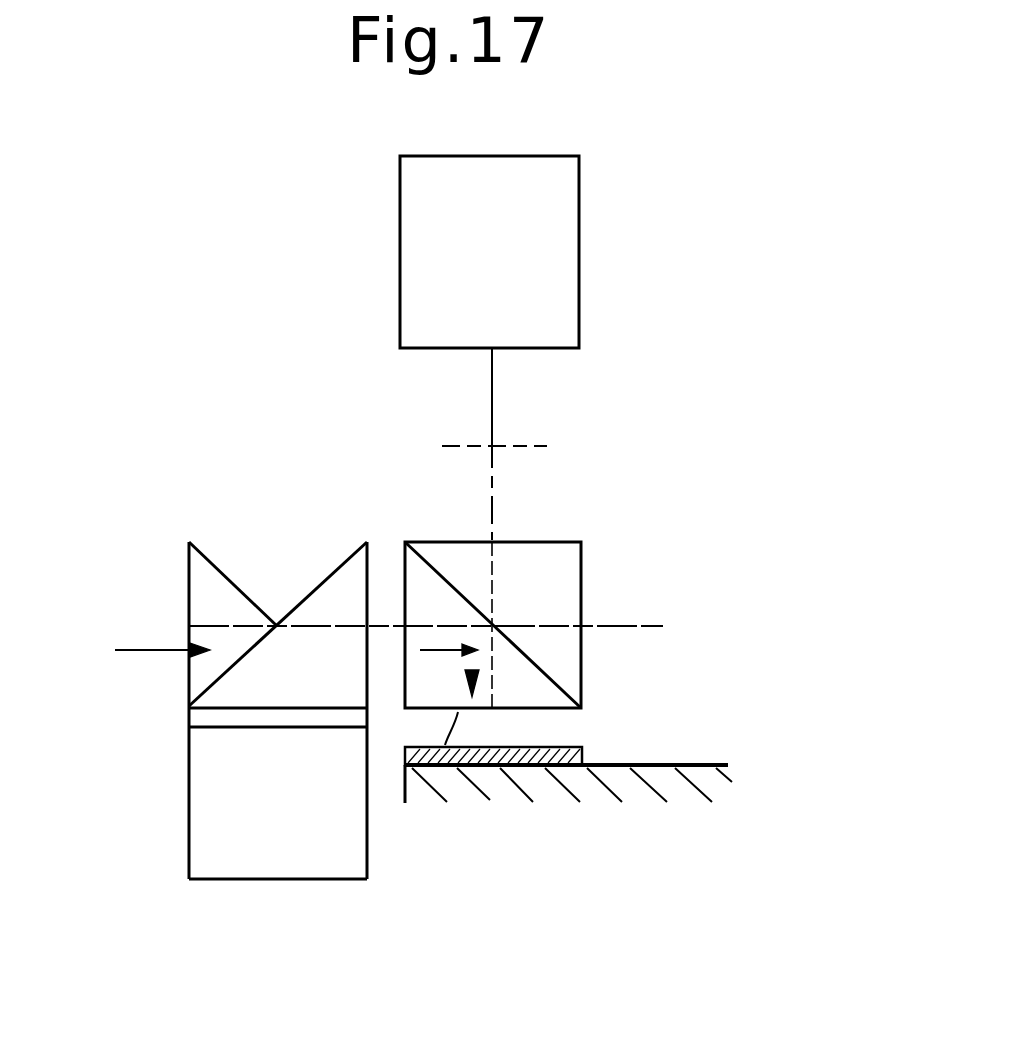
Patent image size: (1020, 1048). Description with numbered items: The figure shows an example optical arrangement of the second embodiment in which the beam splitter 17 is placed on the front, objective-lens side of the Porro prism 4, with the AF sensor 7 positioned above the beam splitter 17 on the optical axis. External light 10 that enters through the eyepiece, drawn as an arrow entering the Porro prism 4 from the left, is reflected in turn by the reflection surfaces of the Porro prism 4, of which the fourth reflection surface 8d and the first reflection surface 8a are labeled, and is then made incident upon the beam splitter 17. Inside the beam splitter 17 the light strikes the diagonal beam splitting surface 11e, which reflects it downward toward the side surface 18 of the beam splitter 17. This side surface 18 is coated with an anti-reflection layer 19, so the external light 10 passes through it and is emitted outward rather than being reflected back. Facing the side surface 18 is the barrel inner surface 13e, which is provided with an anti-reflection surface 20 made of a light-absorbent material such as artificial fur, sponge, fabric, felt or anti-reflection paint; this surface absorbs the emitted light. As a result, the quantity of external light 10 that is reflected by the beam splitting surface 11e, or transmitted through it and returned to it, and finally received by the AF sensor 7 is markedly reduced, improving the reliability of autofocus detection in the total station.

The AF sensor 7 is at (535, 242).
The beam splitter 17 is at (545, 507).
The fourth reflection surface 8d is at (210, 556).
The first reflection surface 8a is at (318, 580).
The external light 10 is at (143, 645).
The beam splitting surface 11e is at (553, 682).
The Porro prism 4 is at (178, 730).
The side surface 18 is at (413, 712).
The anti-reflection layer 19 is at (482, 800).
The anti-reflection surface 20 is at (583, 742).
The barrel inner surface 13e is at (690, 760).